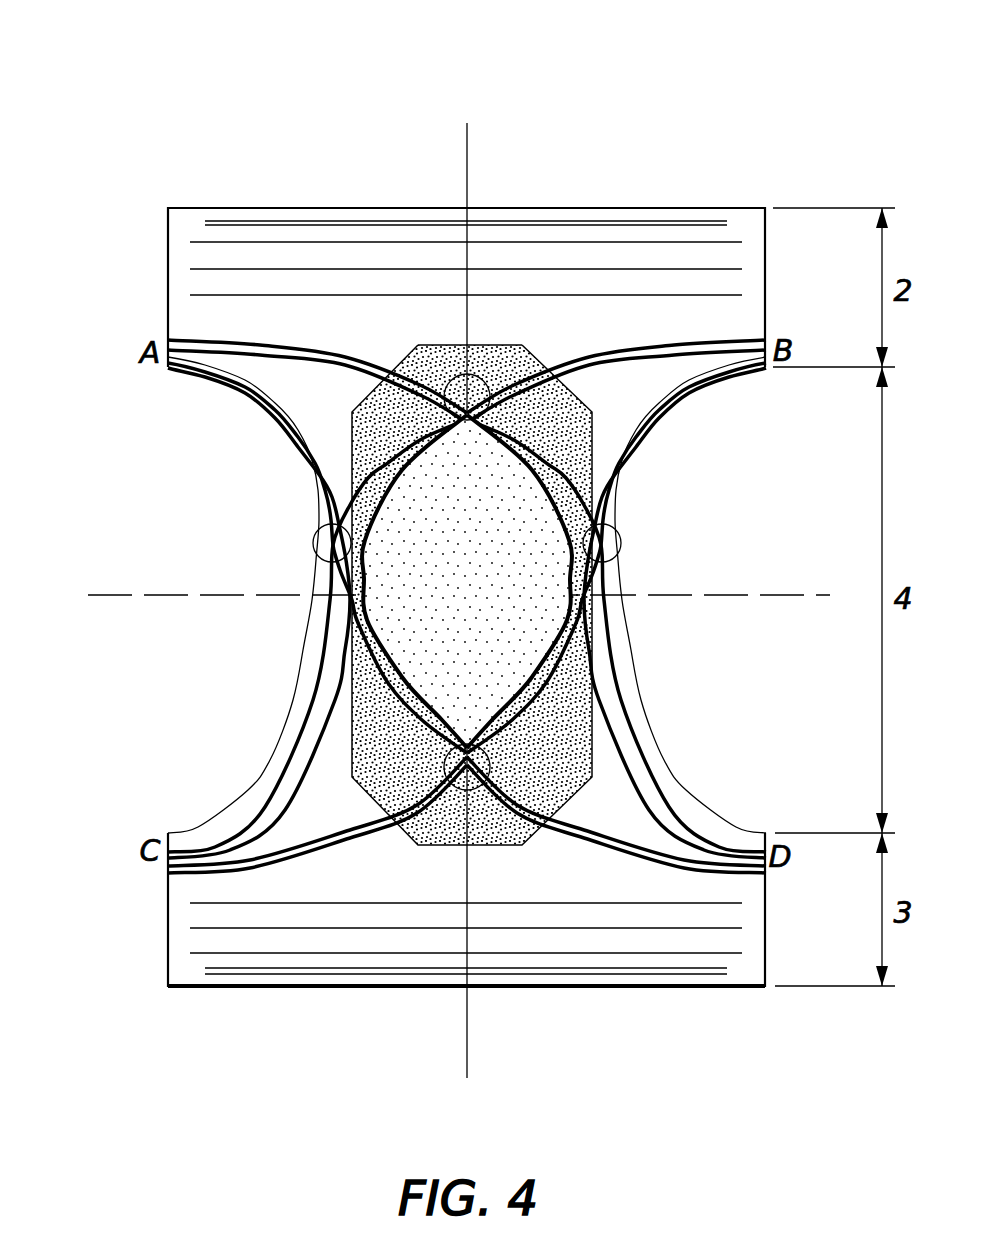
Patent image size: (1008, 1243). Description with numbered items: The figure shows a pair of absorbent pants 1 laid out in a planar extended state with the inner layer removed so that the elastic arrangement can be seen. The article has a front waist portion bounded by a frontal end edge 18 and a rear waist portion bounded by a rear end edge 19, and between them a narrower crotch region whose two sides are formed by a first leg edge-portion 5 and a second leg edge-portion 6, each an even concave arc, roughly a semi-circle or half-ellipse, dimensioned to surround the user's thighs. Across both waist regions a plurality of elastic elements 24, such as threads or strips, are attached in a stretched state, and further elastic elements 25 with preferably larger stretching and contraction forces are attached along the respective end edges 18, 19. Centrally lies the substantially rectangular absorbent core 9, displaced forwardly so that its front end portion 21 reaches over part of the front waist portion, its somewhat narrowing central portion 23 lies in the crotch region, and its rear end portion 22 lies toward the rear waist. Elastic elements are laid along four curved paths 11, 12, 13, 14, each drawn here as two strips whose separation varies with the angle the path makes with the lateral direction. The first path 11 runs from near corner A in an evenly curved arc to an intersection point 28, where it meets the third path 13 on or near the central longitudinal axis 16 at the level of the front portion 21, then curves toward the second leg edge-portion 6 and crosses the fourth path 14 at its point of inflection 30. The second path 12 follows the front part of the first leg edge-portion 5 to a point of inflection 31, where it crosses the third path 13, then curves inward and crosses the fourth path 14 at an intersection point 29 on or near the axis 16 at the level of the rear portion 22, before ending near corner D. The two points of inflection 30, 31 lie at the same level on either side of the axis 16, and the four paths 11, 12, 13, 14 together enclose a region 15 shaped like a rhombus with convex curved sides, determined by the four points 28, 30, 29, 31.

The absorbent pants 1 is at (440, 182).
The first leg edge-portion 5 is at (308, 592).
The second leg edge-portion 6 is at (654, 686).
The absorbent core 9 is at (436, 346).
The first path 11 is at (200, 340).
The second path 12 is at (243, 379).
The third path 13 is at (622, 333).
The fourth path 14 is at (656, 410).
The region enclosed by the paths 15 is at (455, 578).
The central longitudinal axis 16 is at (472, 1012).
The frontal end edge 18 is at (532, 206).
The rear end edge 19 is at (233, 992).
The front end portion of the absorbent core 21 is at (386, 412).
The rear end portion of the absorbent core 22 is at (390, 748).
The central portion of the absorbent core 23 is at (532, 577).
The elastic elements 24 is at (318, 294).
The elastic elements along end edges 25 is at (352, 221).
The intersection point 28 is at (478, 404).
The intersection point 29 is at (462, 778).
The point of inflection 30 is at (620, 528).
The point of inflection 31 is at (350, 527).